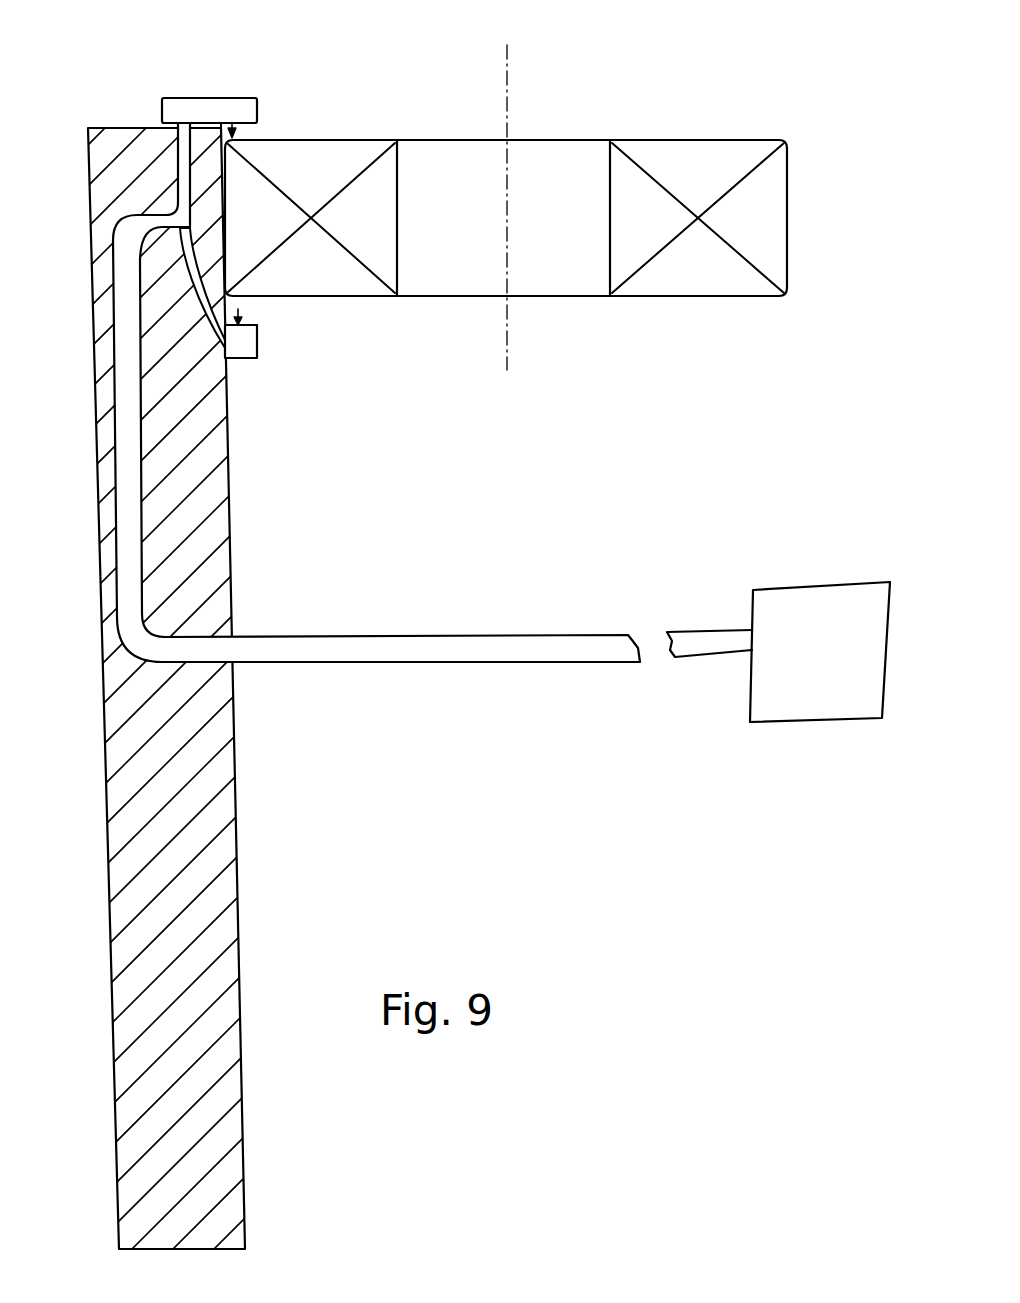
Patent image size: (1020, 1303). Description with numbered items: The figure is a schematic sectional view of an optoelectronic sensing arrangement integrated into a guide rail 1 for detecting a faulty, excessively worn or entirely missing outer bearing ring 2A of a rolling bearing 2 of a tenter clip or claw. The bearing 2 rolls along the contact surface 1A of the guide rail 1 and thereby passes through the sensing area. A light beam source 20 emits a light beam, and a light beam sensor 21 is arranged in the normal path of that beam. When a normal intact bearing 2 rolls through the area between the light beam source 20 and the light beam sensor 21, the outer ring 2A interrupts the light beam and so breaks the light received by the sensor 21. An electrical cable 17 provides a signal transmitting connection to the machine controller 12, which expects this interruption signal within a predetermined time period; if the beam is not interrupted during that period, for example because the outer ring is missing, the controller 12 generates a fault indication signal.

The guide rail 1 is at (213, 455).
The contact surface 1A is at (225, 297).
The rolling bearing 2 is at (563, 198).
The outer bearing ring 2A is at (765, 221).
The machine controller 12 is at (840, 630).
The electrical cable 17 is at (323, 631).
The light beam source 20 is at (239, 98).
The light beam sensor 21 is at (237, 358).